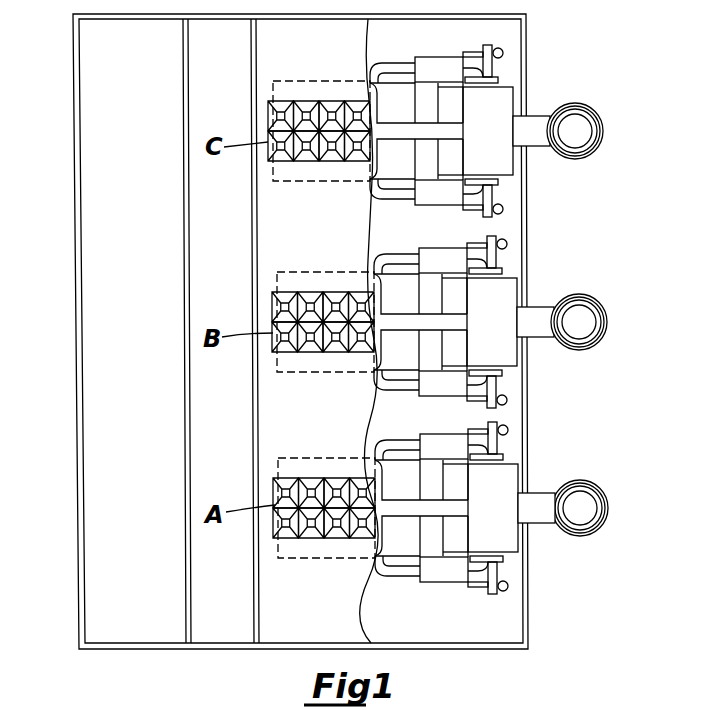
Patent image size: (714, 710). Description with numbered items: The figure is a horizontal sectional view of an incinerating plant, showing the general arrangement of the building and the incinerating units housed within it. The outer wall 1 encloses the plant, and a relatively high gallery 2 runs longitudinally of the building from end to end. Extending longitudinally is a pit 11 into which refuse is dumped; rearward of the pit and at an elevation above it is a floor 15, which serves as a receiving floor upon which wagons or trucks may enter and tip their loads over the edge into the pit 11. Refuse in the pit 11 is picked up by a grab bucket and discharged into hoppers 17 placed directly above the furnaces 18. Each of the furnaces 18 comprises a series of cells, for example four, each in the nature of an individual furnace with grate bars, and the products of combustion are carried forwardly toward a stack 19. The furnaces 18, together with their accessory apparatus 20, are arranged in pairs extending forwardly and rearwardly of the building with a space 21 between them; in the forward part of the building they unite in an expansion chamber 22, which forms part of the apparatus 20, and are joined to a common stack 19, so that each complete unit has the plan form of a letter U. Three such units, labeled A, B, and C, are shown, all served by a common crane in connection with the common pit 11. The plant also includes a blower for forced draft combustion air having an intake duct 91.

The outer wall 1 is at (75, 163).
The gallery 2 is at (64, 520).
The pit 11 is at (234, 632).
The floor 15 is at (147, 573).
The hoppers 17 is at (322, 540).
The furnaces 18 is at (331, 459).
The stack 19 is at (593, 310).
The accessory apparatus 20 is at (481, 425).
The space 21 is at (423, 507).
The expansion chamber 22 is at (512, 477).
The intake duct 91 is at (496, 430).